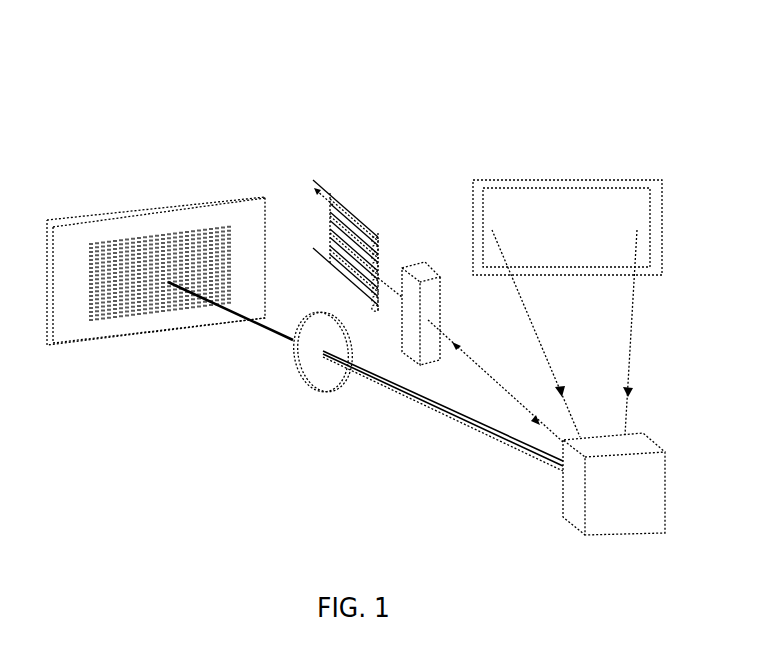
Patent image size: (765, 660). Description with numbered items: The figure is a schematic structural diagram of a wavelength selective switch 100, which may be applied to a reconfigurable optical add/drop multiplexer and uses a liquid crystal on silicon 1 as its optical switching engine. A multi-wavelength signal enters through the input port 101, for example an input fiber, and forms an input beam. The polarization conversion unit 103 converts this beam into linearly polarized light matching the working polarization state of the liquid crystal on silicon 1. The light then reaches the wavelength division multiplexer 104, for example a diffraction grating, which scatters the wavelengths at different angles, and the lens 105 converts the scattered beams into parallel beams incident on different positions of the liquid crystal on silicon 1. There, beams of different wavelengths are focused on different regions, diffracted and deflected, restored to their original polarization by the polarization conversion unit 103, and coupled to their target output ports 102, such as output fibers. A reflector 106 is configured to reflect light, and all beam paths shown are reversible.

The wavelength selective switch 100 is at (362, 84).
The liquid crystal on silicon 1 is at (568, 198).
The input port 101 is at (343, 204).
The output ports 102 is at (360, 225).
The polarization conversion unit 103 is at (432, 302).
The wavelength division multiplexer 104 is at (142, 222).
The lens 105 is at (323, 378).
The reflector 106 is at (573, 487).